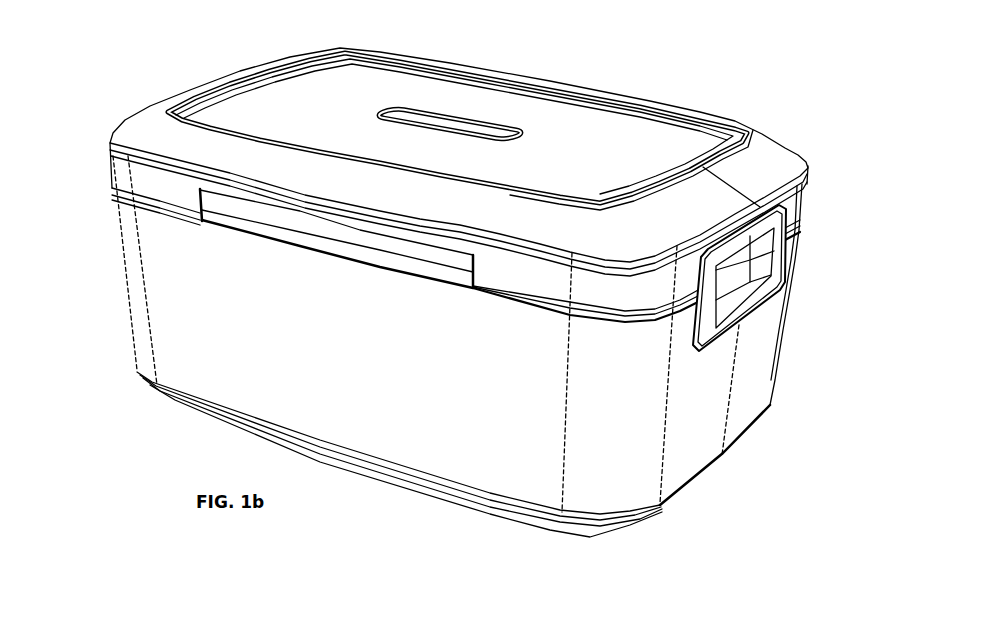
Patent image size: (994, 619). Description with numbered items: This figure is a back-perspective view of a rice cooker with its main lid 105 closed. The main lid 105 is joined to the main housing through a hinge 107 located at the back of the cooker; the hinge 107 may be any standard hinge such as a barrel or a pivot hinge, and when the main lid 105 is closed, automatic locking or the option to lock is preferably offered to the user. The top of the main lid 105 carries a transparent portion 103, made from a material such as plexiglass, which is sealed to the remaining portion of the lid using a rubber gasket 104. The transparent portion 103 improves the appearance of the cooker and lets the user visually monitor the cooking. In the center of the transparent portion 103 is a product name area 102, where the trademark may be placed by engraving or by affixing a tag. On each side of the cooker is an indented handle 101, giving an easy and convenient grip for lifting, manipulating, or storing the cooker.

The indented handle 101 is at (773, 278).
The product name area 102 is at (450, 89).
The transparent portion 103 is at (457, 117).
The rubber gasket 104 is at (631, 139).
The main lid 105 is at (425, 162).
The hinge 107 is at (261, 243).